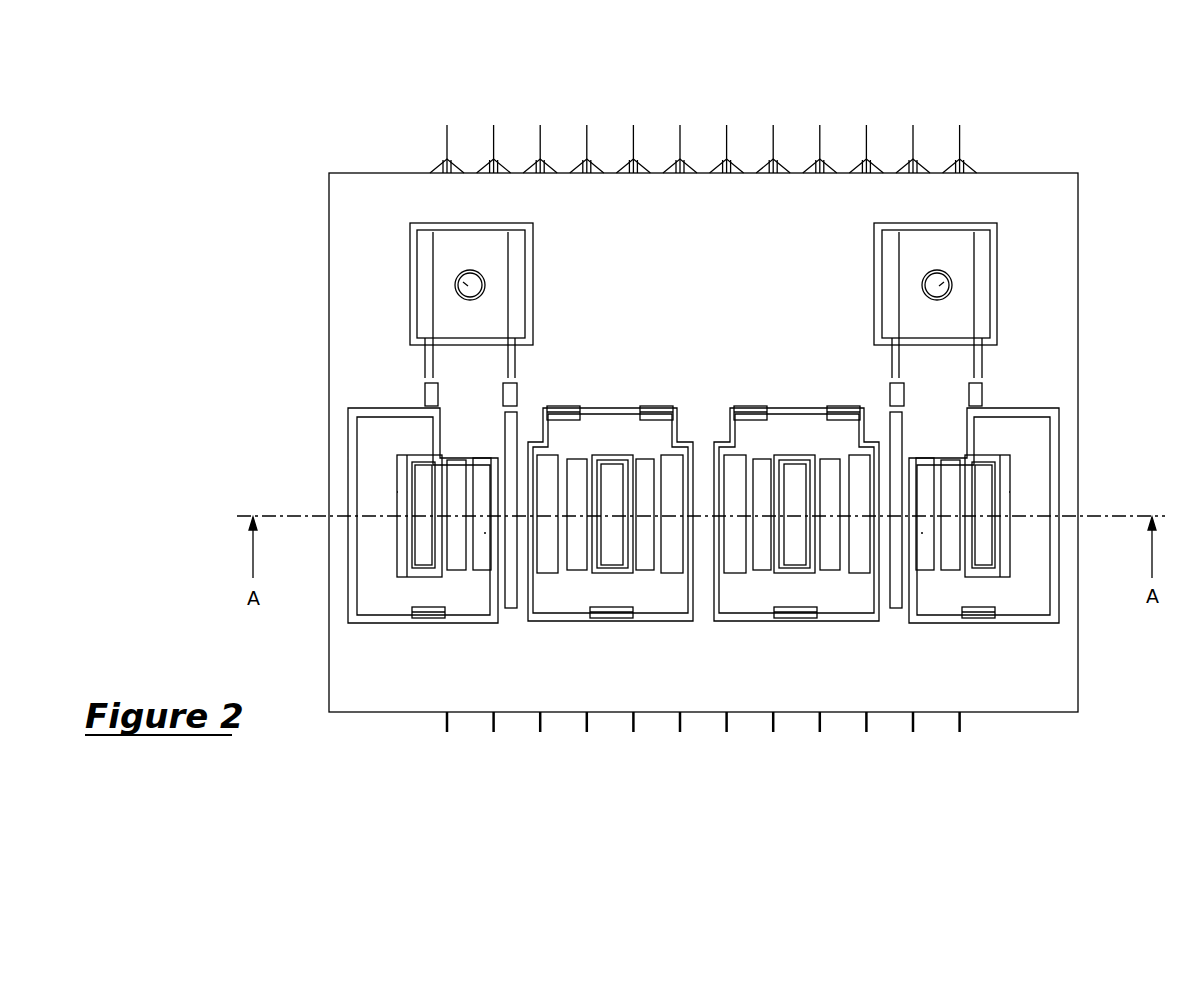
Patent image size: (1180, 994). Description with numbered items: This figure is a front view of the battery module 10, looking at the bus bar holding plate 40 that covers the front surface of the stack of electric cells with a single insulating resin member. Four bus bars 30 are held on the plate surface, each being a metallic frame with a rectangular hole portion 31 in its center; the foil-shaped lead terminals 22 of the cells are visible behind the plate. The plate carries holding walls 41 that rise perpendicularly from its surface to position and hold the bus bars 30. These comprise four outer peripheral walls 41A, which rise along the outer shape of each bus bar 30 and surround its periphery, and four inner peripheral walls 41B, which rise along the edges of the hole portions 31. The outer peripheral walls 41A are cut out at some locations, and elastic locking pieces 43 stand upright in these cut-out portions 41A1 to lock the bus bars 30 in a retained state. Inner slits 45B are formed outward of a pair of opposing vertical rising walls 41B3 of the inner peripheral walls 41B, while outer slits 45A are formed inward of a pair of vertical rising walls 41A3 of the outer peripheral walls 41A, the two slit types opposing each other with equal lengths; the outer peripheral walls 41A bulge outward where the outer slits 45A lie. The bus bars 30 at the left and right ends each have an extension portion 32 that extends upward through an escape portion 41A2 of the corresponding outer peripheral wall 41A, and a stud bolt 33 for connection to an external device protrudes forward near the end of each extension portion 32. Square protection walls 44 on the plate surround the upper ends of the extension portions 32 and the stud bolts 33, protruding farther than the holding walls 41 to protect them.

The battery module 10 is at (366, 126).
The bus bar holding plate 40 is at (990, 186).
The protection walls 44 is at (405, 233).
The stud bolt 33 is at (463, 283).
The extension portion 32 is at (437, 352).
The escape portion 41A2 is at (410, 408).
The outer slits 45A is at (490, 457).
The inner slits 45B is at (450, 457).
The hole portion 31 is at (398, 492).
The lead terminals 22 is at (485, 533).
The holding walls 41 is at (390, 753).
The outer peripheral walls 41A is at (360, 617).
The inner peripheral walls 41B is at (413, 578).
The cut-out portions 41A1 is at (628, 492).
The rising walls 41A3 is at (576, 492).
The rising walls 41B3 is at (575, 408).
The elastic locking pieces 43 is at (580, 405).
The bus bar 30 is at (552, 602).